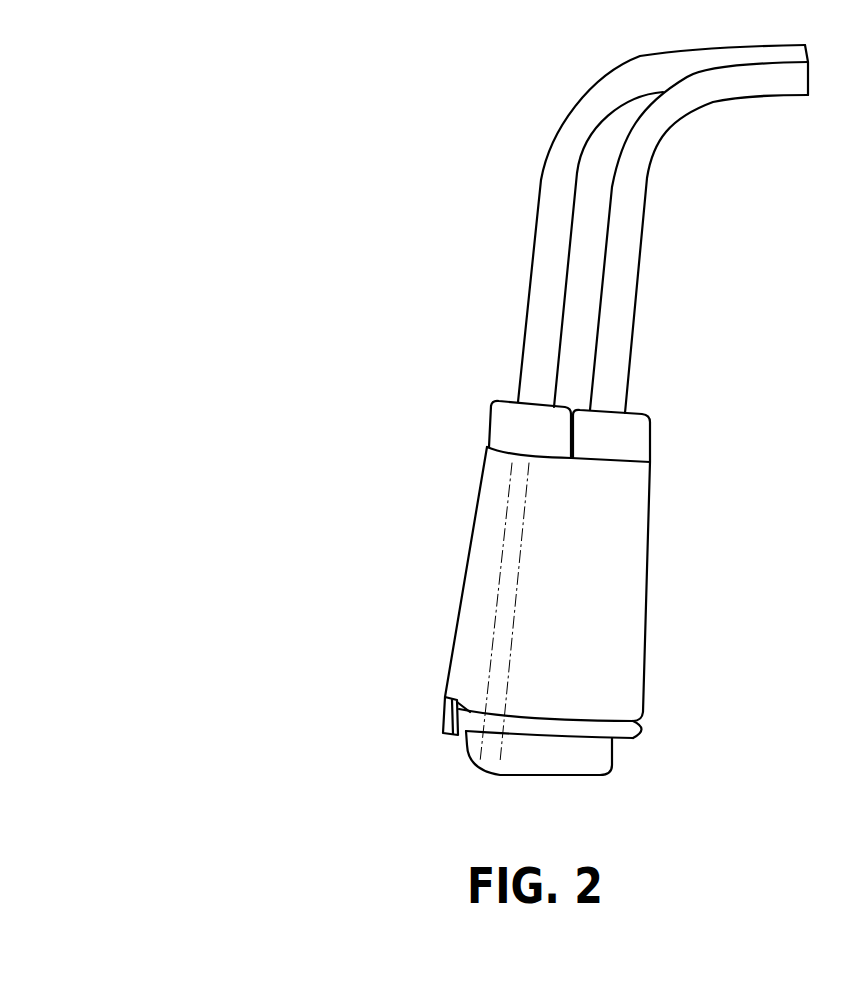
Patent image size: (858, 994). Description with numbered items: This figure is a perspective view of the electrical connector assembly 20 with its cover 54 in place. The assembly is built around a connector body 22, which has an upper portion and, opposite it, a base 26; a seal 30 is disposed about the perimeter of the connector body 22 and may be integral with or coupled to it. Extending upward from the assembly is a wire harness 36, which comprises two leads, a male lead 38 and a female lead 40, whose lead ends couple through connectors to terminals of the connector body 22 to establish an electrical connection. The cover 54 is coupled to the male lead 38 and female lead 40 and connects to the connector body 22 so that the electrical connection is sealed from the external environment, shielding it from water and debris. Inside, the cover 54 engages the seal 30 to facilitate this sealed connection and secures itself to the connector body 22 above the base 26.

The electrical connector assembly 20 is at (148, 197).
The connector body 22 is at (660, 744).
The base 26 is at (597, 767).
The seal 30 is at (487, 728).
The wire harness 36 is at (700, 147).
The male lead 38 is at (630, 257).
The female lead 40 is at (538, 232).
The cover 54 is at (463, 610).